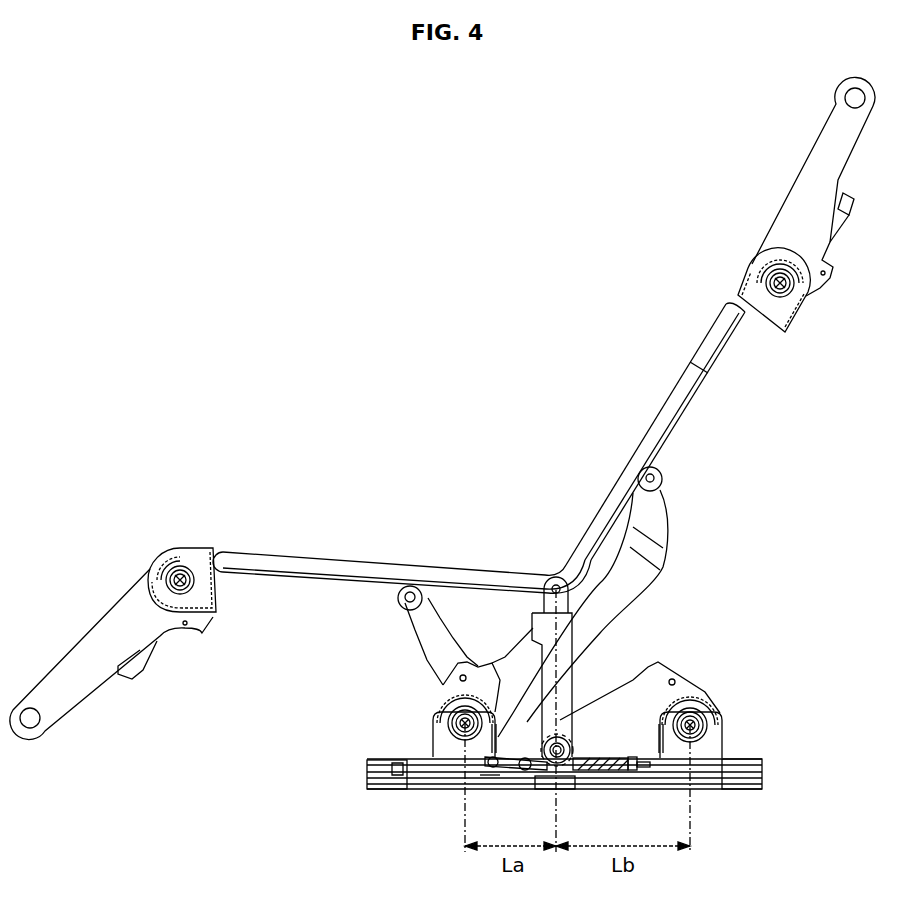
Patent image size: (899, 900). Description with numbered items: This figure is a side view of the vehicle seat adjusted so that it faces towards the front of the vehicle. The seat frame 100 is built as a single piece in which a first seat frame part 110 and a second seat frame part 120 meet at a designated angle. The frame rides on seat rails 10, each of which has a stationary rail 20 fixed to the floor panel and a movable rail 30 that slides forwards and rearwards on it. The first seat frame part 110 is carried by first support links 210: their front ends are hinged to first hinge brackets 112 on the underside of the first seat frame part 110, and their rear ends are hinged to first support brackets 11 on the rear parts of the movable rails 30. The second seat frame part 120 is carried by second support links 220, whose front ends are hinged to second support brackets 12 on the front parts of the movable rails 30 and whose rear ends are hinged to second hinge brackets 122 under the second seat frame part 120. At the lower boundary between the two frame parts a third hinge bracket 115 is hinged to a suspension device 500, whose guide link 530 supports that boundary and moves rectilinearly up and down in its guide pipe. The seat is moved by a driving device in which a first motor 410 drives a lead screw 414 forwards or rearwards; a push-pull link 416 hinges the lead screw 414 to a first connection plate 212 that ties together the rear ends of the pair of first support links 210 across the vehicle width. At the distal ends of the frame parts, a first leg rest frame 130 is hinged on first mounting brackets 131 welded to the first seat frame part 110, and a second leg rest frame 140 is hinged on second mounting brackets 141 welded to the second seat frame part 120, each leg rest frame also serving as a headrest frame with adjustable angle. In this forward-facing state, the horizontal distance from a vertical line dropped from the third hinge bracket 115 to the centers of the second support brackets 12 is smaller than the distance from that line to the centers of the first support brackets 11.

The seat rail 10 is at (516, 781).
The stationary rail 20 is at (418, 785).
The movable rail 30 is at (420, 757).
The first support bracket 11 is at (710, 737).
The second support bracket 12 is at (445, 740).
The seat frame 100 is at (479, 448).
The first seat frame part 110 is at (343, 560).
The first hinge bracket 112 is at (397, 595).
The third hinge bracket 115 is at (560, 583).
The second seat frame part 120 is at (619, 434).
The second hinge bracket 122 is at (660, 466).
The first leg rest frame 130 is at (82, 632).
The first mounting bracket 131 is at (203, 560).
The second leg rest frame 140 is at (788, 185).
The second mounting bracket 141 is at (748, 282).
The first support link 210 is at (413, 643).
The first connection plate 212 is at (490, 777).
The second support link 220 is at (672, 540).
The first motor 410 is at (608, 757).
The lead screw 414 is at (627, 758).
The push-pull link 416 is at (523, 760).
The suspension device 500 is at (527, 625).
The guide link 530 is at (543, 608).